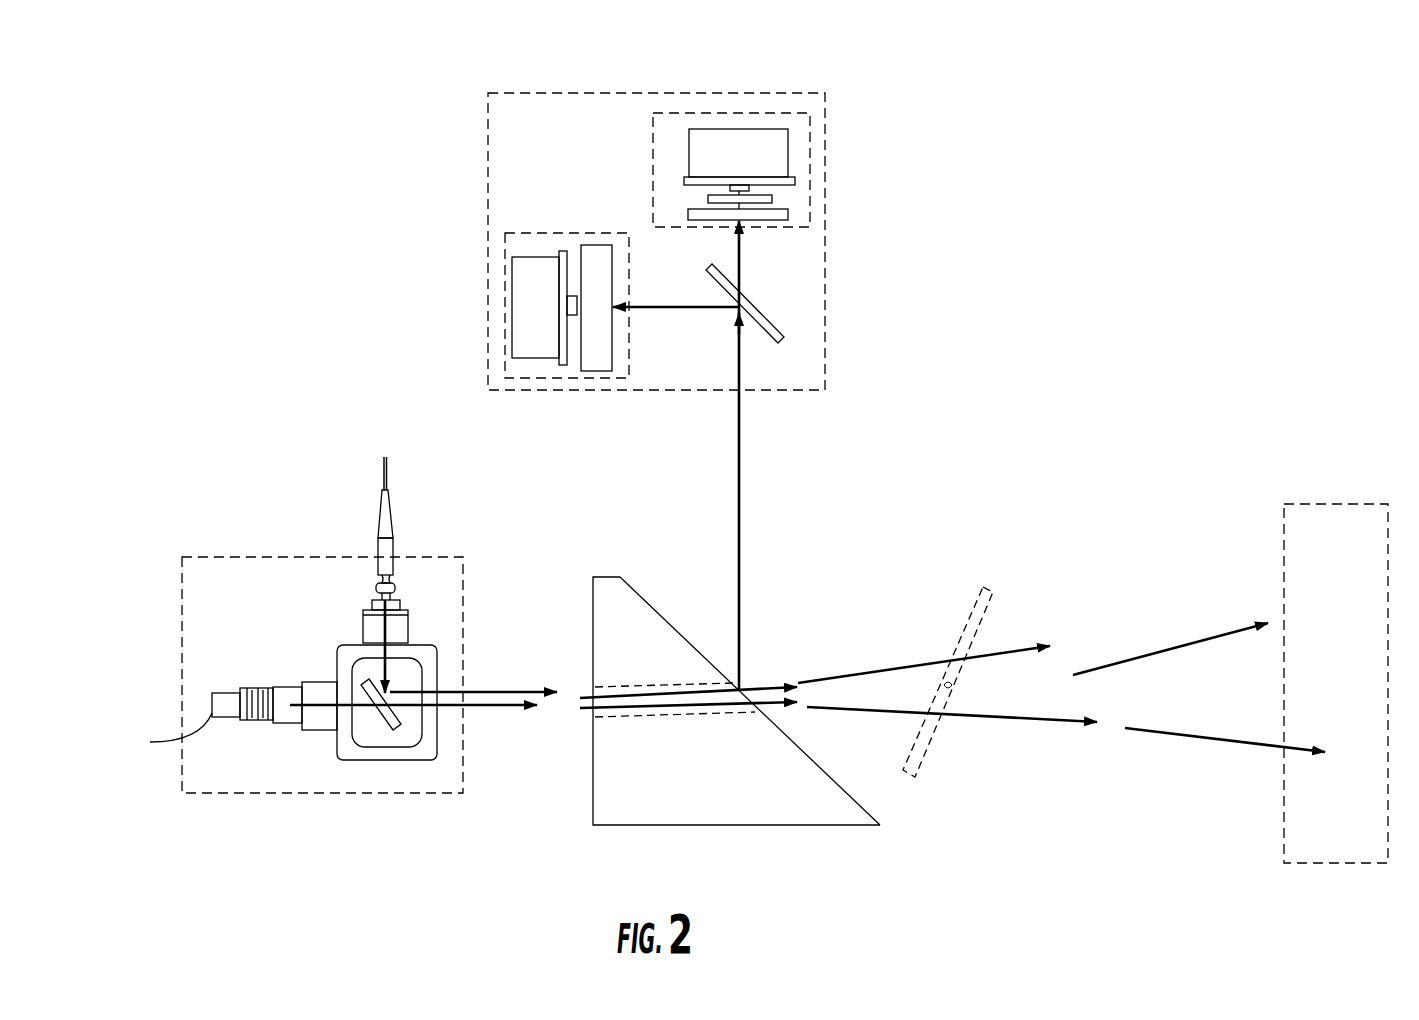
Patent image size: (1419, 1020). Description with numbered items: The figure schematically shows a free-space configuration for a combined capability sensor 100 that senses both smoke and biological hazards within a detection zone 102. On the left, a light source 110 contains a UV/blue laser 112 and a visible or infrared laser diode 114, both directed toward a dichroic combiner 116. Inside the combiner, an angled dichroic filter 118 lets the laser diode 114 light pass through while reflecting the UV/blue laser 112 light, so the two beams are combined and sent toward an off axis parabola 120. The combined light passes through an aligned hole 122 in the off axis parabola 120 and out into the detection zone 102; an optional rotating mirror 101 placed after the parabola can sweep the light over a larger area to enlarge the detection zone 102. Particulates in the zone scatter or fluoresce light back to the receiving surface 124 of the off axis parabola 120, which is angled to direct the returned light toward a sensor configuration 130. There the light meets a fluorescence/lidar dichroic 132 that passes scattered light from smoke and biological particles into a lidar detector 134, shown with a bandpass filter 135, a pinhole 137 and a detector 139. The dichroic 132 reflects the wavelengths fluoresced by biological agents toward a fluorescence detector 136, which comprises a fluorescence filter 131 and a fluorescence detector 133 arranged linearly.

The combined capability sensor 100 is at (1112, 245).
The rotating mirror 101 is at (993, 590).
The detection zone 102 is at (1350, 863).
The light source 110 is at (463, 613).
The UV/blue laser 112 is at (358, 598).
The laser diode 114 is at (226, 721).
The dichroic combiner 116 is at (380, 760).
The dichroic filter 118 is at (370, 683).
The off axis parabola 120 is at (665, 827).
The aligned hole 122 is at (668, 686).
The receiving surface 124 is at (853, 800).
The sensor configuration 130 is at (825, 230).
The fluorescence filter 131 is at (590, 371).
The fluorescence/lidar dichroic 132 is at (783, 346).
The fluorescence detector 133 is at (512, 318).
The lidar detector 134 is at (757, 113).
The bandpass filter 135 is at (682, 214).
The fluorescence detector 136 is at (505, 275).
The pinhole 137 is at (693, 193).
The detector 139 is at (689, 148).